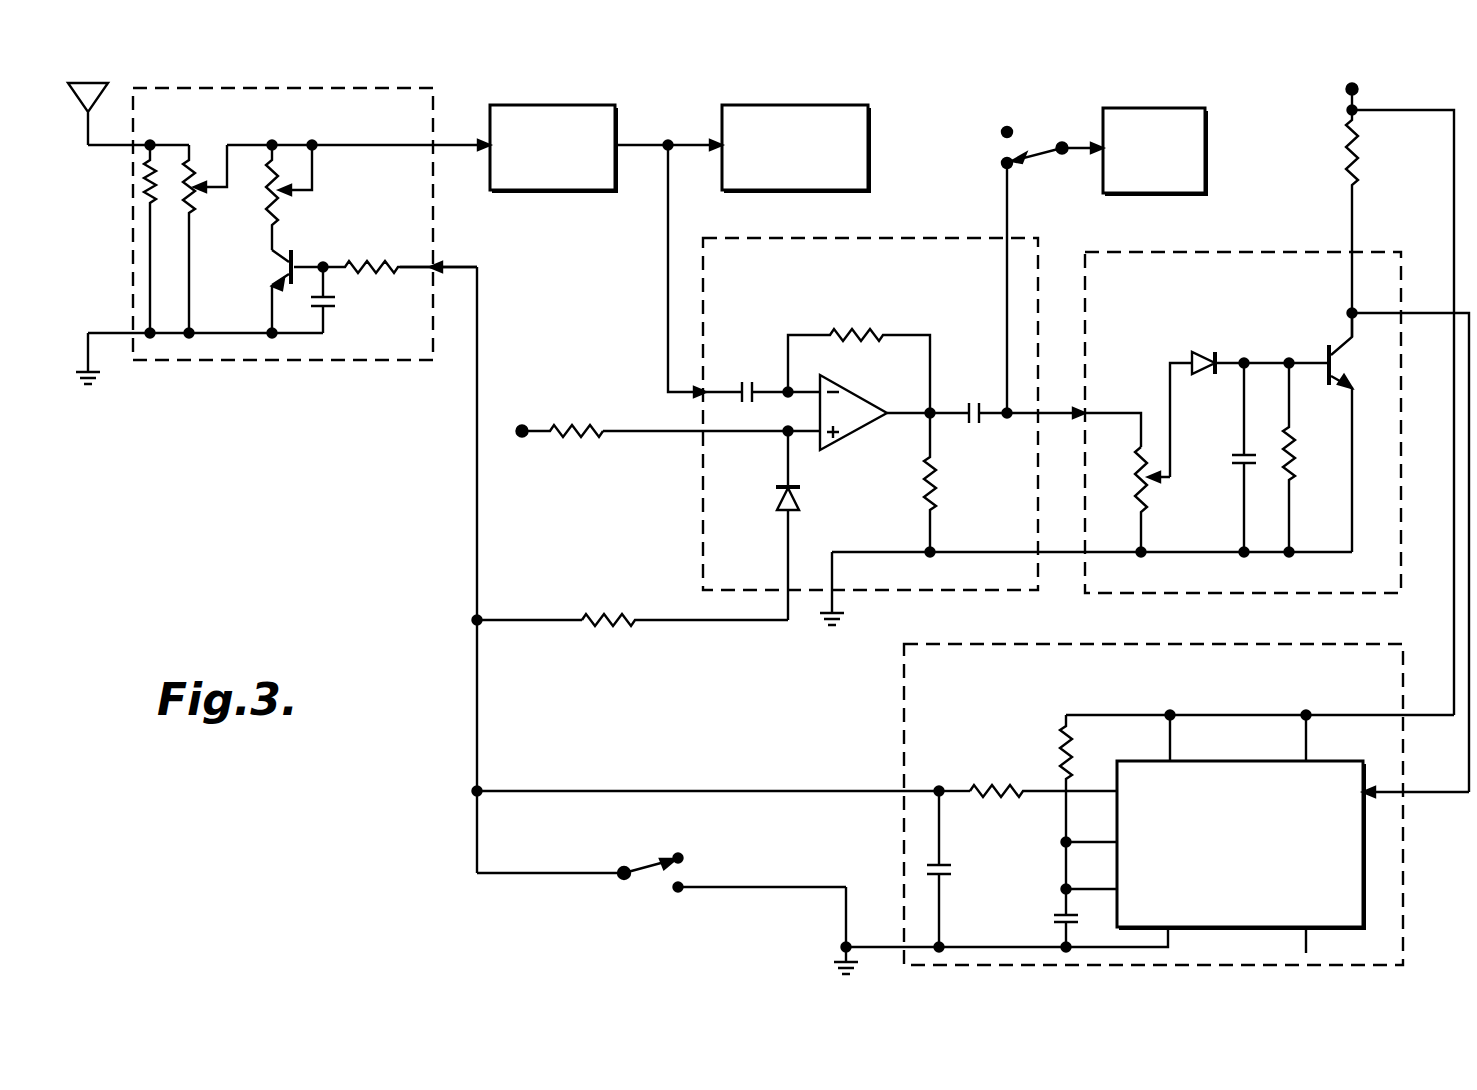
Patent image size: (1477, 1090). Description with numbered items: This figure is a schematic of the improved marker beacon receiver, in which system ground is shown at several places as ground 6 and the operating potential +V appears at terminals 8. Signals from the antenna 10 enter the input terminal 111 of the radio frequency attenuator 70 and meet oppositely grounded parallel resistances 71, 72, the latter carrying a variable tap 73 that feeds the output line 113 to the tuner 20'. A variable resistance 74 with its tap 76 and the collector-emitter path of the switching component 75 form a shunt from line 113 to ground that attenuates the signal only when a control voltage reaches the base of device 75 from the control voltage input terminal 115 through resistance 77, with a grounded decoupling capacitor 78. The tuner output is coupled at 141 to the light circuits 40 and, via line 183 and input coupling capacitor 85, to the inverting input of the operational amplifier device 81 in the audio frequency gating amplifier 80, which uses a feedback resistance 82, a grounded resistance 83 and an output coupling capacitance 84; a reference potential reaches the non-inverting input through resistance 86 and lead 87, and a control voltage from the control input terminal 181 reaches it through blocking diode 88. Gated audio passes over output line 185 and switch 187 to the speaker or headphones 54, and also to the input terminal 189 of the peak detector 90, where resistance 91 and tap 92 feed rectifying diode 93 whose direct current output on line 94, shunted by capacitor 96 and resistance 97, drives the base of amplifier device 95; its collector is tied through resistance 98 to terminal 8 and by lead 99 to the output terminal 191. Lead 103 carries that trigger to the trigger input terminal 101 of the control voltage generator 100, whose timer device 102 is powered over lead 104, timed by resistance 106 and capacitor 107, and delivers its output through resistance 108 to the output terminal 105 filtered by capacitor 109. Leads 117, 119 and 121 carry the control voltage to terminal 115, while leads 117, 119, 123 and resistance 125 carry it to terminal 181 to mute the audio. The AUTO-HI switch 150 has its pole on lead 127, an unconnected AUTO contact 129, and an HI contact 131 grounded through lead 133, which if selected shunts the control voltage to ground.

The antenna 10 is at (105, 85).
The radio frequency attenuator 70 is at (390, 88).
The input terminal 111 is at (108, 148).
The resistance 71 is at (145, 203).
The resistance 72 is at (185, 215).
The variable tap 73 is at (200, 190).
The variable resistance 74 is at (268, 222).
The switching component 75 is at (295, 255).
The tap 76 is at (290, 192).
The resistance 77 is at (380, 278).
The decoupling capacitor 78 is at (332, 308).
The system ground 6 is at (95, 375).
The radio frequency signal output line 113 is at (448, 150).
The control voltage input terminal 115 is at (425, 260).
The tuner 20' is at (563, 127).
The coupling 141 is at (685, 142).
The light circuits 40 is at (832, 105).
The line 183 is at (665, 275).
The audio frequency gating amplifier 80 is at (872, 238).
The input coupling capacitor 85 is at (738, 382).
The resistance 82 is at (858, 330).
The operational amplifier device 81 is at (862, 392).
The lead 87 is at (660, 431).
The terminals 8 is at (520, 436).
The resistance 86 is at (585, 436).
The blocking diode 88 is at (778, 490).
The output coupling capacitance 84 is at (968, 425).
The resistance 83 is at (925, 492).
The control voltage input terminal 181 is at (785, 595).
The output line 185 is at (1005, 213).
The switch 187 is at (1048, 158).
The speaker or headphones 54 is at (1170, 108).
The peak detector circuit 90 is at (1228, 252).
The input terminal 189 is at (1120, 410).
The resistance 91 is at (1135, 478).
The variable tap 92 is at (1155, 480).
The rectifying diode 93 is at (1203, 352).
The line 94 is at (1268, 362).
The direct current amplifier device 95 is at (1326, 383).
The capacitor 96 is at (1240, 452).
The resistance 97 is at (1295, 465).
The lead 99 is at (1365, 320).
The resistance 98 is at (1345, 150).
The output terminal 191 is at (1405, 312).
The lead 103 is at (1452, 755).
The control voltage generator 100 is at (1155, 644).
The timer chip device 102 is at (1322, 761).
The lead 117 is at (645, 790).
The control voltage output terminal 105 is at (905, 790).
The resistance 108 is at (980, 782).
The capacitor 109 is at (952, 872).
The resistance 106 is at (1062, 752).
The capacitor 107 is at (1052, 918).
The lead 104 is at (1312, 714).
The trigger input terminal 101 is at (1405, 803).
The lead 119 is at (475, 665).
The lead 121 is at (475, 445).
The lead 123 is at (510, 625).
The resistance 125 is at (612, 615).
The lead 127 is at (475, 850).
The AUTO-HI switch 150 is at (635, 862).
The AUTO contact 129 is at (684, 860).
The HI contact 131 is at (672, 890).
The lead 133 is at (805, 887).